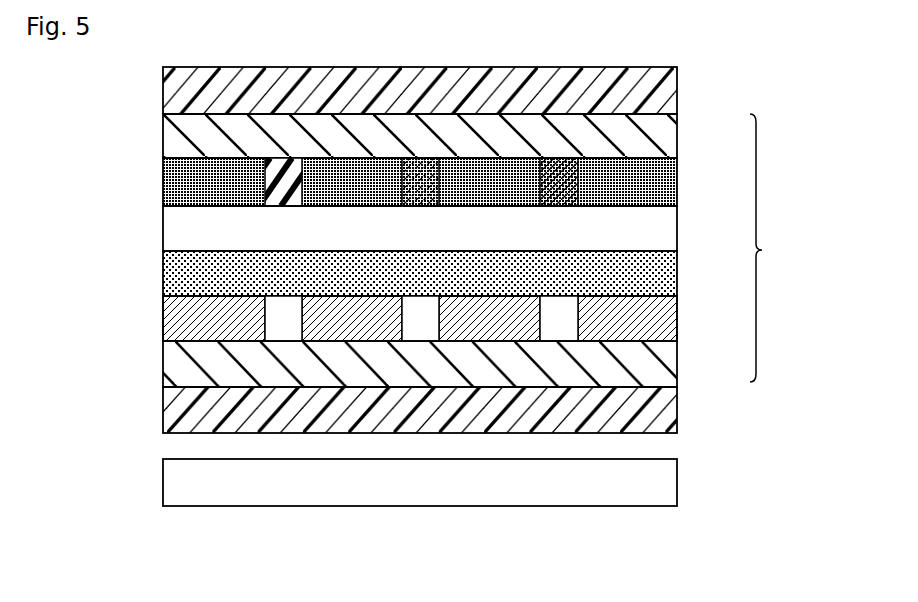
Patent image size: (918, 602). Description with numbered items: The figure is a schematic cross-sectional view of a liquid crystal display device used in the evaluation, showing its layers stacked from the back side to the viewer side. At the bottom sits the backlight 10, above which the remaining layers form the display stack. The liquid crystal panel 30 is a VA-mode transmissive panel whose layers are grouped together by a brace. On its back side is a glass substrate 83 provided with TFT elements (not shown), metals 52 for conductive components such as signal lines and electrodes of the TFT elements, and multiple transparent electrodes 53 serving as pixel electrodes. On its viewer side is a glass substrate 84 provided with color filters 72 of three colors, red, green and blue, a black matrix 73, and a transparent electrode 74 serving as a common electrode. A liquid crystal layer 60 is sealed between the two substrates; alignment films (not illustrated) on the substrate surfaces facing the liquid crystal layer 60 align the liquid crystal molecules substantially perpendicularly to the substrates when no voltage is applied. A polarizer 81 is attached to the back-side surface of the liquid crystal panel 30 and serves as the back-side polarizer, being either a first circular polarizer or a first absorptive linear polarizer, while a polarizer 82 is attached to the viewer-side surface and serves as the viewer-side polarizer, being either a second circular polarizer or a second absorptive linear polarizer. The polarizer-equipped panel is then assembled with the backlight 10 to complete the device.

The polarizer 82 is at (663, 97).
The glass substrate 84 is at (665, 142).
The black matrix 73 is at (665, 175).
The color filters 72 is at (556, 182).
The transparent electrode 74 is at (665, 233).
The liquid crystal layer 60 is at (176, 271).
The metals 52 is at (665, 313).
The transparent electrodes 53 is at (558, 321).
The glass substrate 83 is at (665, 370).
The polarizer 81 is at (665, 415).
The backlight 10 is at (665, 485).
The liquid crystal panel 30 is at (774, 248).